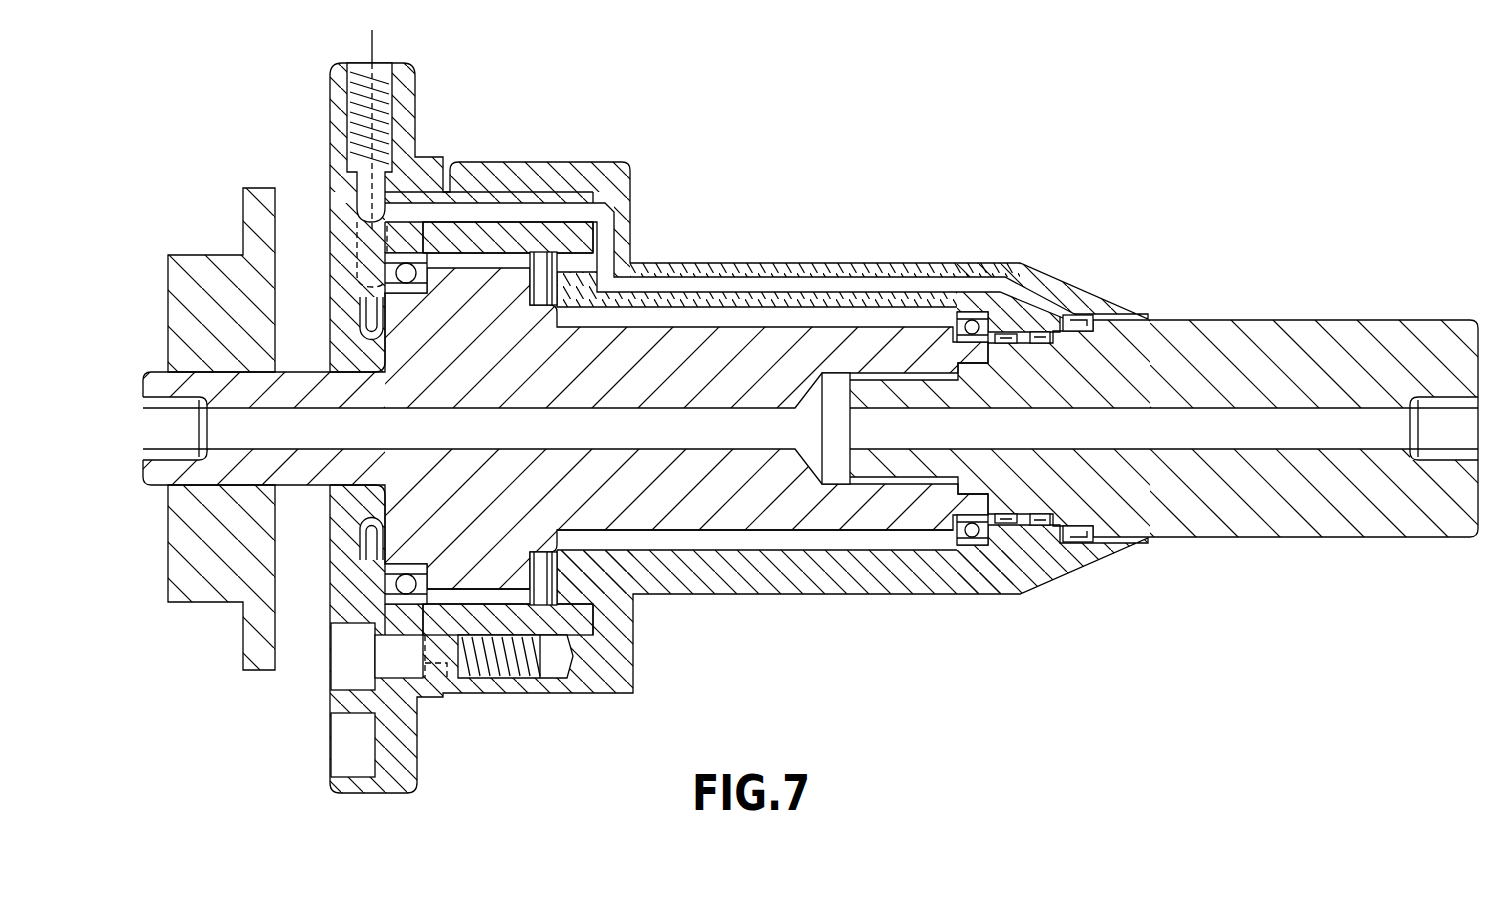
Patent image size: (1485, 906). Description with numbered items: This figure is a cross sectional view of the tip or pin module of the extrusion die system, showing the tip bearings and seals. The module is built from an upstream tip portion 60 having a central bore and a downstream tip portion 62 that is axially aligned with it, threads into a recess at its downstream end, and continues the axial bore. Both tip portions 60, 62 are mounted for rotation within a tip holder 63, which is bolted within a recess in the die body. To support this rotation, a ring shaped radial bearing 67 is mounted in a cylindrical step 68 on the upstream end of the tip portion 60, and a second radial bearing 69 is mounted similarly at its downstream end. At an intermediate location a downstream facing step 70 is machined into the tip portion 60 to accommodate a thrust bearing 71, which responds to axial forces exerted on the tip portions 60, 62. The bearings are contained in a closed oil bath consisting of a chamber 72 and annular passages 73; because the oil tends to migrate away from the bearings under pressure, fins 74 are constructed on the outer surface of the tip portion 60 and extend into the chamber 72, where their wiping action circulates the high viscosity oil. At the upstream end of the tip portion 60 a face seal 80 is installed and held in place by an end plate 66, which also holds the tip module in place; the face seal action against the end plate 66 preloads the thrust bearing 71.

The upstream tip portion 60 is at (655, 357).
The downstream tip portion 62 is at (1322, 345).
The tip holder 63 is at (753, 573).
The end plate 66 is at (330, 166).
The radial bearing 67 is at (972, 318).
The cylindrical step 68 is at (935, 530).
The second radial bearing 69 is at (387, 277).
The downstream facing step 70 is at (520, 280).
The thrust bearing 71 is at (543, 267).
The chamber 72 is at (498, 582).
The annular passages 73 is at (703, 540).
The fins 74 is at (477, 582).
The face seal 80 is at (365, 323).